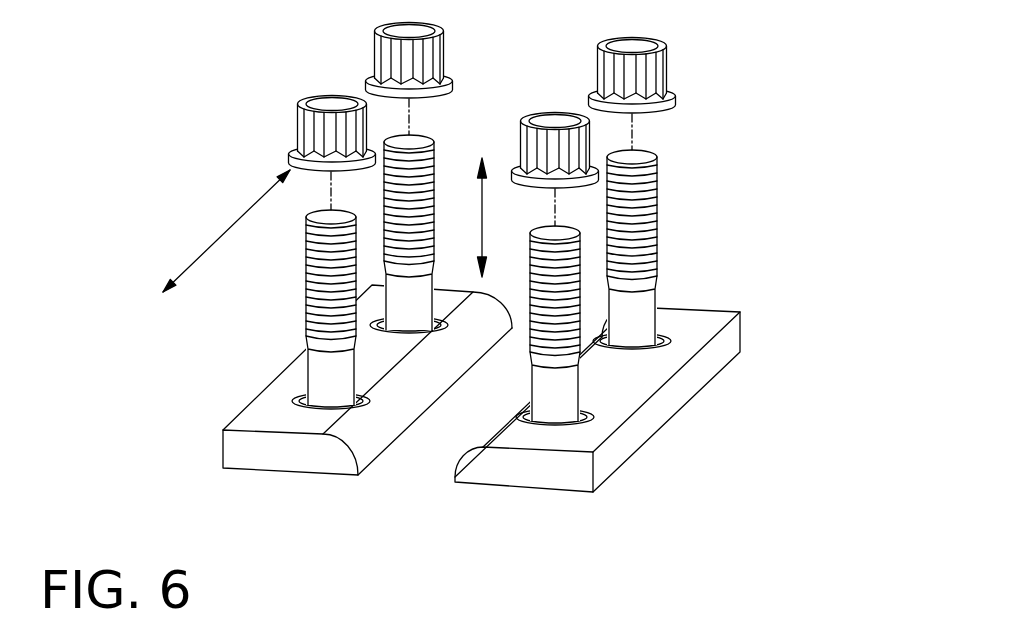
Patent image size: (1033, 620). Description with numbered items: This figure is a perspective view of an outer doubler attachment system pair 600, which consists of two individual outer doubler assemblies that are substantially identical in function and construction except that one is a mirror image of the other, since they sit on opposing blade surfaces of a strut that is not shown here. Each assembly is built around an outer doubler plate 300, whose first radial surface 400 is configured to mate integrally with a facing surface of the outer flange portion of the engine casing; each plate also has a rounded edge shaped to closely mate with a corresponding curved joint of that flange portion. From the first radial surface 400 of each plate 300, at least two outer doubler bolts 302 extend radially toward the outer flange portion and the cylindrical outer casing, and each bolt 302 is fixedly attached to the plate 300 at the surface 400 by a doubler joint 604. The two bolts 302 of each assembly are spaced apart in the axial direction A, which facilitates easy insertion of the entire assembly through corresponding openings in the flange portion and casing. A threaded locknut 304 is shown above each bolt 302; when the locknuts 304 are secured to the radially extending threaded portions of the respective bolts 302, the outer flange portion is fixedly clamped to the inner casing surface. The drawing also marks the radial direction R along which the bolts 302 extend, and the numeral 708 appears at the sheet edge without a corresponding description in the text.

The outer doubler bolt 302 is at (647, 272).
The threaded locknut 304 is at (657, 65).
The outer doubler plate 300 is at (723, 342).
The first radial surface 400 is at (667, 372).
The outer doubler attachment system pair 600 is at (238, 483).
The doubler joint 604 is at (606, 402).
The component of adjacent figure 708 is at (503, 619).
The axial direction A is at (225, 232).
The direction R is at (482, 218).